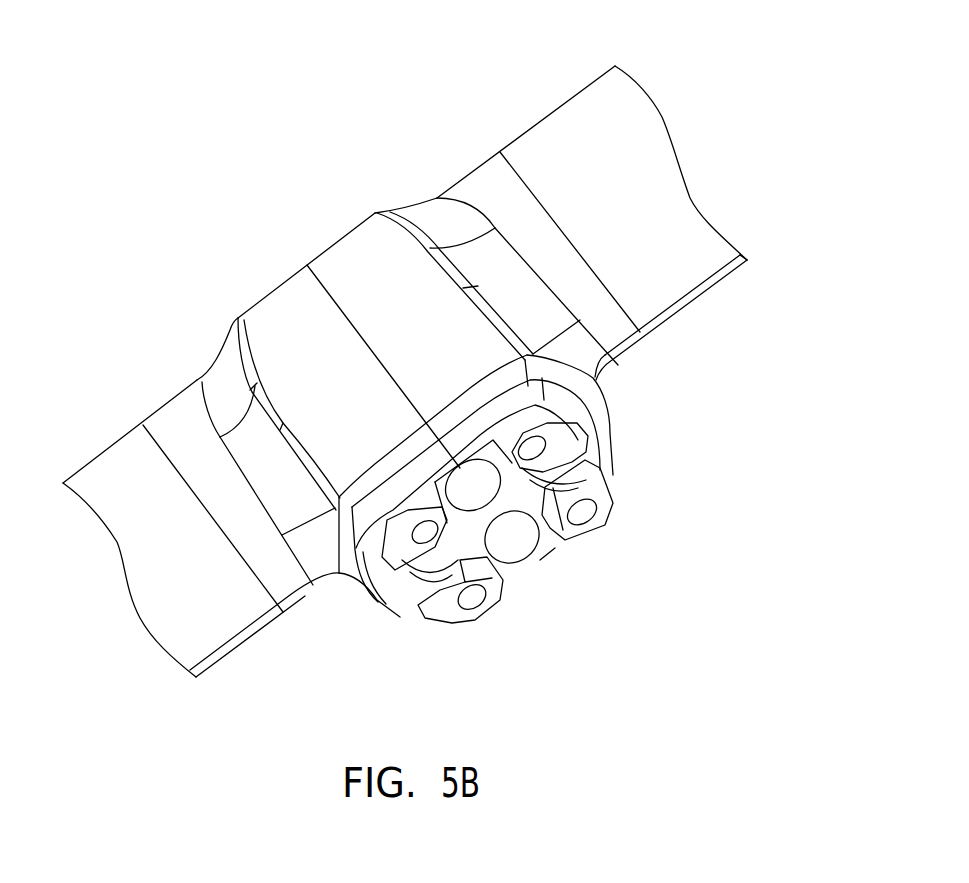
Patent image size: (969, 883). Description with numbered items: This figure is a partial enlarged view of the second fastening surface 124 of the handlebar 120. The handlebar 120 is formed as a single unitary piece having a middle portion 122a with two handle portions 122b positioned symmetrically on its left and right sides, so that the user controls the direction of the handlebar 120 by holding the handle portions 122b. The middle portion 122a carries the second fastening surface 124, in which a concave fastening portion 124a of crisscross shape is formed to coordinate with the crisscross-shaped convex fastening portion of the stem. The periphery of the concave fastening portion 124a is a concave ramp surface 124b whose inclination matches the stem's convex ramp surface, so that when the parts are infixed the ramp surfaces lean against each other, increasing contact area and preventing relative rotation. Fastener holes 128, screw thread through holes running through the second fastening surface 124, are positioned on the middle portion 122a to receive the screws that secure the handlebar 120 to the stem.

The handlebar 120 is at (186, 186).
The middle portion 122a is at (294, 305).
The handle portions 122b is at (130, 478).
The second fastening surface 124 is at (552, 588).
The concave fastening portion 124a is at (470, 527).
The concave ramp surface 124b is at (612, 478).
The fastener holes 128 is at (428, 566).